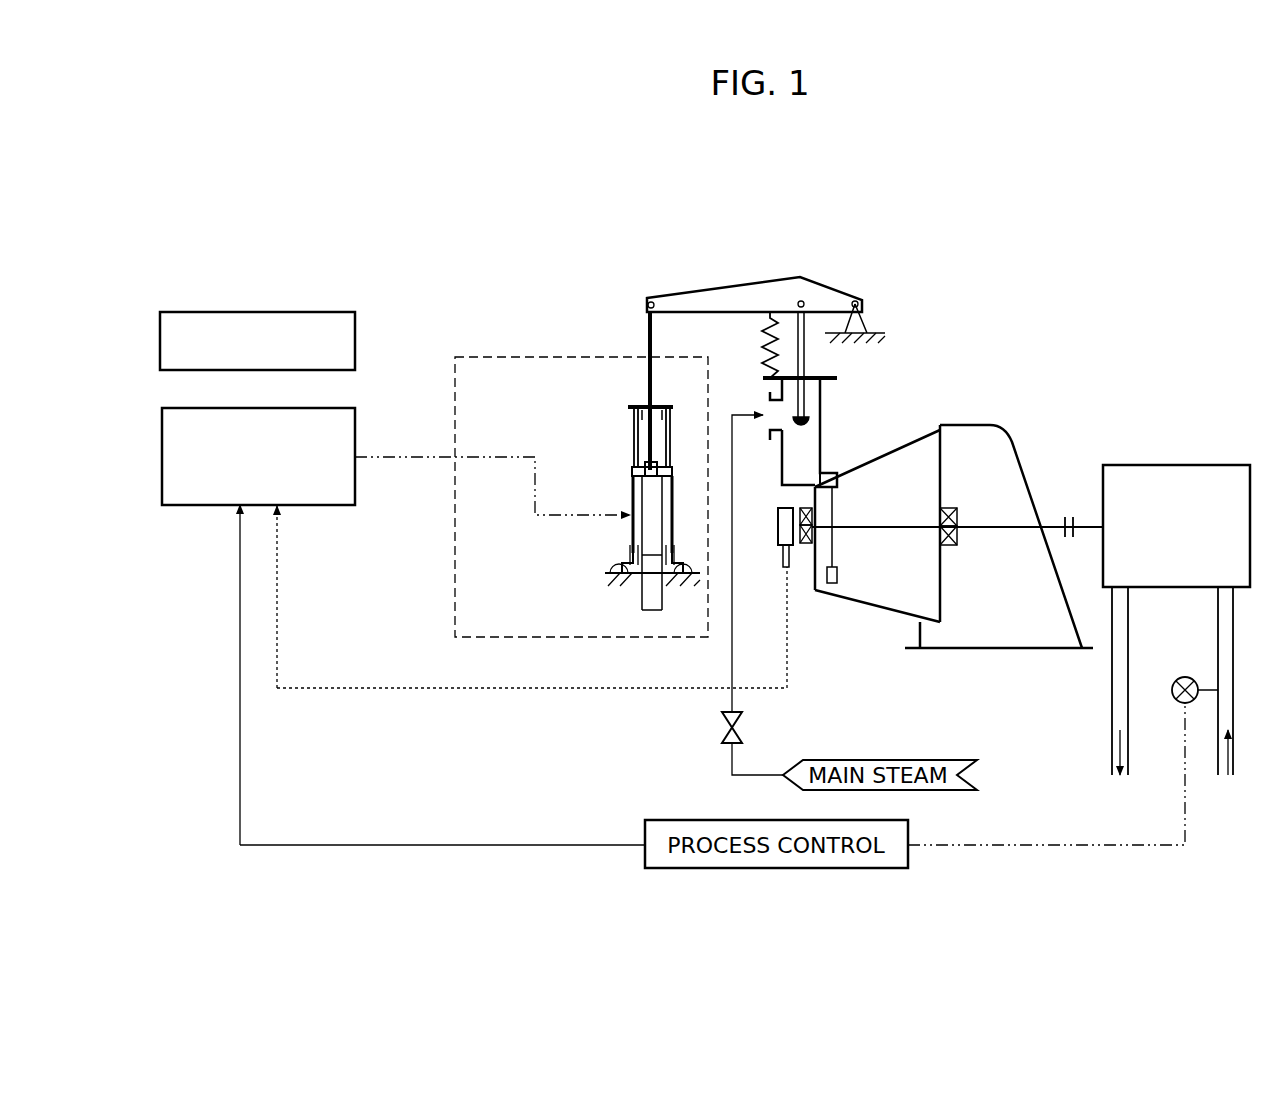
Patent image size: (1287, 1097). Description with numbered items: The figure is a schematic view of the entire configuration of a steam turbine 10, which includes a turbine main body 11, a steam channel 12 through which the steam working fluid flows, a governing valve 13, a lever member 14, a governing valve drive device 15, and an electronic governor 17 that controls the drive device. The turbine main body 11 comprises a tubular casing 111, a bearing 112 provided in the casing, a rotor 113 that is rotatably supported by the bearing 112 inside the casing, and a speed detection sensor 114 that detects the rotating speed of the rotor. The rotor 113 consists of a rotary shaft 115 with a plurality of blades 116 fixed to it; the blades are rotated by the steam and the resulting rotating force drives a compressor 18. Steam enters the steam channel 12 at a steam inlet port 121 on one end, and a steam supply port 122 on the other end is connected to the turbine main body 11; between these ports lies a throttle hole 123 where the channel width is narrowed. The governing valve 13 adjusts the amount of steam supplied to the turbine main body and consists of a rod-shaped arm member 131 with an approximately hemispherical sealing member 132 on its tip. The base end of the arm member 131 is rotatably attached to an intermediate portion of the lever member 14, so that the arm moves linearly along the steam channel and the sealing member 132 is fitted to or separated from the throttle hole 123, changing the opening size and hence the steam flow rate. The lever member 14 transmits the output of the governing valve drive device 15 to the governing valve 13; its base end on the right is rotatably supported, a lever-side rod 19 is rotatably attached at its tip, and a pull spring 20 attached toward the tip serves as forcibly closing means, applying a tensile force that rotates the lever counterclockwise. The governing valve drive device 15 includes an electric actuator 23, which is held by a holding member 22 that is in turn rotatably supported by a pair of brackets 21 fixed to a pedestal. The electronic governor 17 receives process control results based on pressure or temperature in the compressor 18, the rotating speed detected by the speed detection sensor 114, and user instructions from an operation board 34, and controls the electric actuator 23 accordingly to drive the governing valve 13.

The steam turbine 10 is at (1035, 286).
The turbine main body 11 is at (990, 408).
The casing 111 is at (905, 432).
The bearing 112 is at (806, 545).
The rotor 113 is at (878, 540).
The speed detection sensor 114 is at (778, 540).
The rotary shaft 115 is at (1000, 530).
The blades 116 is at (835, 497).
The steam channel 12 is at (828, 395).
The steam inlet port 121 is at (757, 425).
The steam supply port 122 is at (830, 458).
The throttle hole 123 is at (798, 440).
The governing valve 13 is at (808, 352).
The arm member 131 is at (808, 312).
The sealing member 132 is at (785, 408).
The lever member 14 is at (717, 282).
The governing valve drive device 15 is at (540, 352).
The electronic governor 17 is at (355, 425).
The compressor 18 is at (1165, 465).
The lever-side rod 19 is at (653, 335).
The pull spring 20 is at (782, 300).
The brackets 21 is at (620, 573).
The holding member 22 is at (633, 429).
The electric actuator 23 is at (555, 540).
The operation board 34 is at (355, 338).